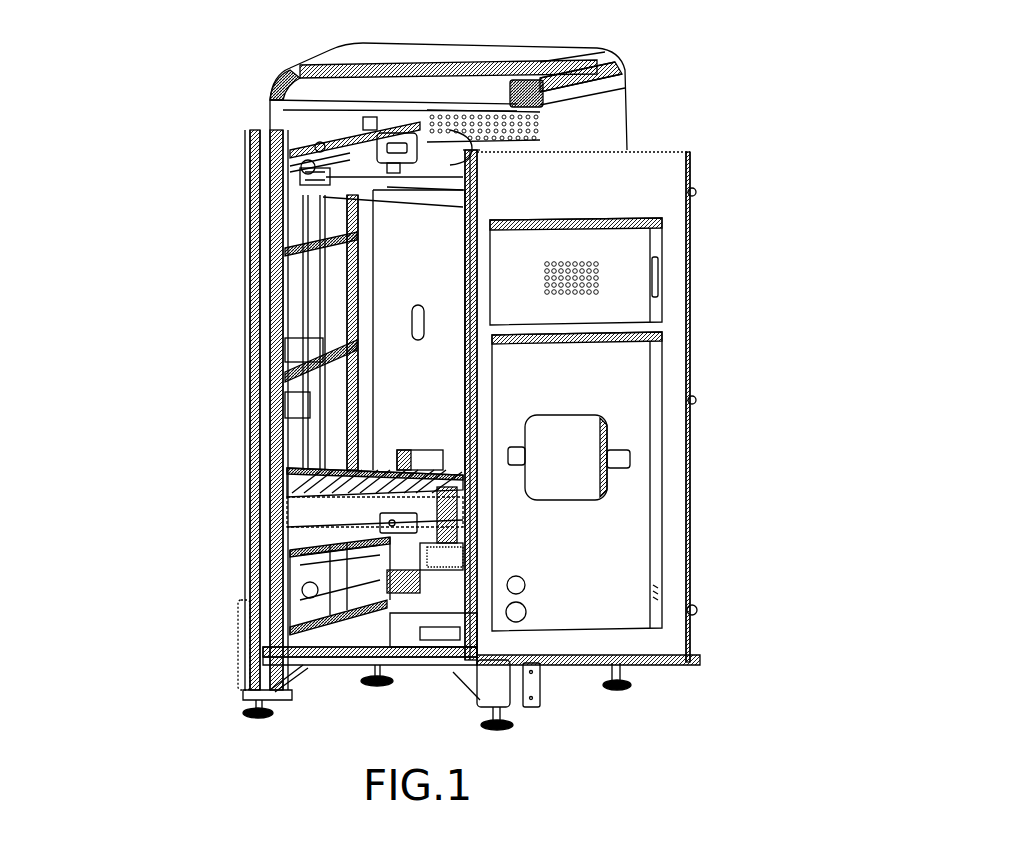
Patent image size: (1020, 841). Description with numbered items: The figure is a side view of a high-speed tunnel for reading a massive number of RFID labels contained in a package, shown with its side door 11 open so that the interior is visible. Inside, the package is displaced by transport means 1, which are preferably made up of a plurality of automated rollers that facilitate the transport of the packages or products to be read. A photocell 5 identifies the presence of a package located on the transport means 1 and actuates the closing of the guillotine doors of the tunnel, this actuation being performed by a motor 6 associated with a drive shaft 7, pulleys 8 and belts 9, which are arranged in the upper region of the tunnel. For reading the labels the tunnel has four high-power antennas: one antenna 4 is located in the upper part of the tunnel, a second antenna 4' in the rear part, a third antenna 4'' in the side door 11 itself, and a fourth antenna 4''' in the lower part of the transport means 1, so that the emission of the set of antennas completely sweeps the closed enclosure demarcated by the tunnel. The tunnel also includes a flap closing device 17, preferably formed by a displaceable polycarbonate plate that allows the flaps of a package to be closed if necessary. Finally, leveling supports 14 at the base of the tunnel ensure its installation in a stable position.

The transport means 1 is at (330, 488).
The high-power antenna 4 is at (660, 355).
The second antenna 4' is at (619, 421).
The third antenna 4'' is at (686, 457).
The fourth antenna 4''' is at (250, 592).
The photocell 5 is at (445, 503).
The motor 6 is at (343, 120).
The drive shaft 7 is at (320, 174).
The pulleys 8 is at (300, 148).
The belts 9 is at (303, 463).
The side door 11 is at (626, 172).
The leveling supports 14 is at (510, 725).
The flap closing device 17 is at (422, 288).